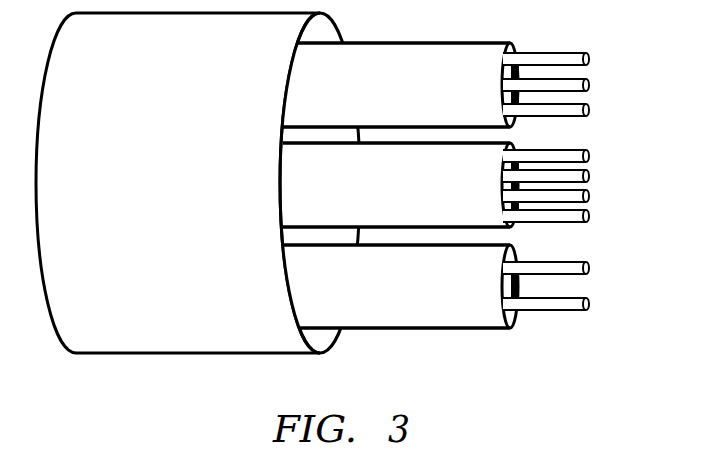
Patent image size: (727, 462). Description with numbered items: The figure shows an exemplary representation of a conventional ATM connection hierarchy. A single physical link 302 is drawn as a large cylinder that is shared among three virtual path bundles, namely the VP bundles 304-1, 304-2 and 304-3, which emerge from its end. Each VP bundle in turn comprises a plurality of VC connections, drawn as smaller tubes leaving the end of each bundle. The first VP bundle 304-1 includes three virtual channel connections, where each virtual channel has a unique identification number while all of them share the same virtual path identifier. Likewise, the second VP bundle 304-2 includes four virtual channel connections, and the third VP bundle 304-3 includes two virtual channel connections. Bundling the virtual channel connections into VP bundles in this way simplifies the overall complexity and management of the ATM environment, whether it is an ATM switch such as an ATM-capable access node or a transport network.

The physical link 302 is at (197, 250).
The VP bundle 304-1 is at (415, 97).
The VP bundle 304-2 is at (415, 196).
The VP bundle 304-3 is at (415, 298).